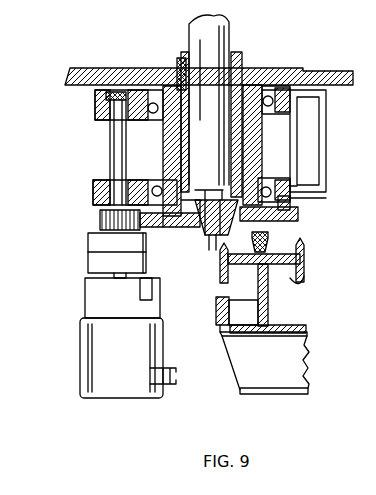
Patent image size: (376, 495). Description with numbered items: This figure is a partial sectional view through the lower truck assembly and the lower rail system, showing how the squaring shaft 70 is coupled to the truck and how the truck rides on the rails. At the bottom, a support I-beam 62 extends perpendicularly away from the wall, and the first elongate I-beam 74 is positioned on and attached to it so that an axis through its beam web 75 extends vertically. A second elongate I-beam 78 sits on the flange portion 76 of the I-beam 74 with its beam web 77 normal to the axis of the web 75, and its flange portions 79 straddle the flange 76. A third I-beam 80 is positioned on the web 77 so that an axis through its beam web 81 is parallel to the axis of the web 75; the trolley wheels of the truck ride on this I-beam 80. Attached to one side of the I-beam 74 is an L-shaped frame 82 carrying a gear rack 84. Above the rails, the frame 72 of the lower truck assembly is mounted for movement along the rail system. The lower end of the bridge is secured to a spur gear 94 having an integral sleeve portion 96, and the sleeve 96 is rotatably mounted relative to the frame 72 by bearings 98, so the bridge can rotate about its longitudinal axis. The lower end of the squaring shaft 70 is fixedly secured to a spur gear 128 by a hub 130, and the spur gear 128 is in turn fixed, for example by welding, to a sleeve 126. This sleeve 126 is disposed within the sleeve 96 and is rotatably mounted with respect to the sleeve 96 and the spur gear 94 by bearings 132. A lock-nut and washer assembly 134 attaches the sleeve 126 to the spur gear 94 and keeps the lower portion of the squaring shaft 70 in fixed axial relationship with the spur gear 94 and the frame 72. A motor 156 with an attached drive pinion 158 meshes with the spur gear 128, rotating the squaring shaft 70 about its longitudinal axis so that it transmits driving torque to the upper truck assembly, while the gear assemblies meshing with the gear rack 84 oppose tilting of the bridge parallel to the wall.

The support I-beam 62 is at (287, 378).
The squaring shaft 70 is at (210, 60).
The frame 72 is at (322, 100).
The first elongate I-beam 74 is at (281, 315).
The beam web 75 is at (268, 308).
The flange portion 76 is at (296, 278).
The beam web 77 is at (277, 263).
The second elongate I-beam 78 is at (270, 282).
The flange portions 79 is at (222, 262).
The third I-beam 80 is at (239, 243).
The beam web 81 is at (248, 251).
The L-shaped frame 82 is at (224, 332).
The gear rack 84 is at (216, 315).
The spur gear 94 is at (330, 70).
The sleeve portion 96 is at (177, 163).
The bearings 98 is at (160, 125).
The sleeve 126 is at (243, 95).
The spur gear 128 is at (298, 221).
The hub 130 is at (207, 233).
The bearings 132 is at (178, 68).
The lock-nut and washer assembly 134 is at (178, 60).
The motor 156 is at (100, 360).
The drive pinion 158 is at (100, 220).